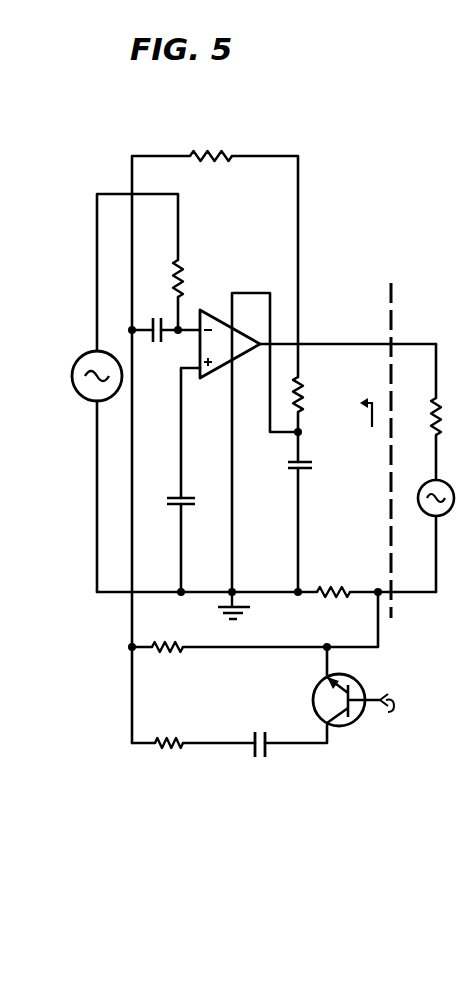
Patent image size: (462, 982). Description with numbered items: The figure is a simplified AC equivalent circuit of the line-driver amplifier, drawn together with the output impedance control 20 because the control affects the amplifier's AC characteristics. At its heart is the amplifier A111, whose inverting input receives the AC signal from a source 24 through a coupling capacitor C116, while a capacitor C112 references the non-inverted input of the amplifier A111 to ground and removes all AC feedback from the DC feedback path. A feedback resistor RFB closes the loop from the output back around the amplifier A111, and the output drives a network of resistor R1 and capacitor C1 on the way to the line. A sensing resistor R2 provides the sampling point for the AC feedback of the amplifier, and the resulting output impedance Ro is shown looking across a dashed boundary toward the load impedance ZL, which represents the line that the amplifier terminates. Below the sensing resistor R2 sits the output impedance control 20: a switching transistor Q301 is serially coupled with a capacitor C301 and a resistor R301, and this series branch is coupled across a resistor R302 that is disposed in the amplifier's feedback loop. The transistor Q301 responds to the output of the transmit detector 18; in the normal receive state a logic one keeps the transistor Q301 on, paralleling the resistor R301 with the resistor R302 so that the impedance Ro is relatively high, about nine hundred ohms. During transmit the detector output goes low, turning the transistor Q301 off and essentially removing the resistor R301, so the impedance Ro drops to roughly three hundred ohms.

The AC signal source 24 is at (75, 357).
The output impedance control 20 is at (363, 809).
The transmit detector 18 is at (392, 740).
The amplifier A111 is at (235, 352).
The feedback resistor RFB is at (231, 150).
The capacitor C116 is at (172, 339).
The capacitor C112 is at (168, 496).
The resistor R1 is at (303, 386).
The capacitor C1 is at (312, 464).
The output impedance Ro is at (366, 427).
The load impedance ZL is at (430, 412).
The sensing resistor R2 is at (338, 586).
The resistor R302 is at (186, 627).
The resistor R301 is at (190, 720).
The capacitor C301 is at (267, 752).
The switching transistor Q301 is at (313, 700).